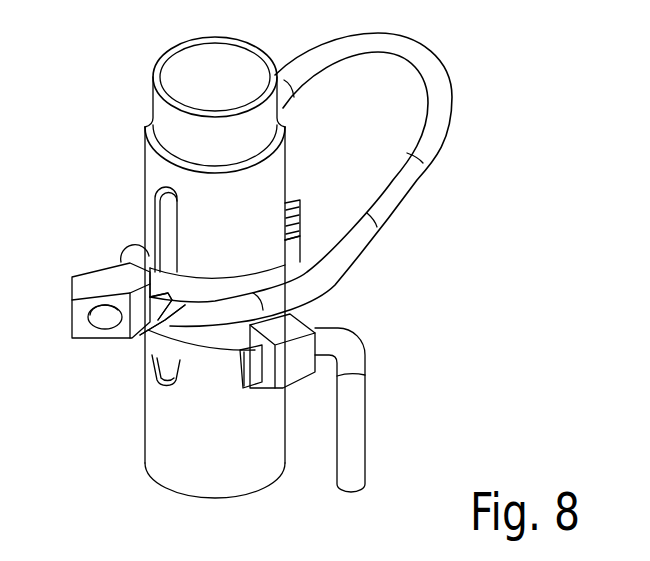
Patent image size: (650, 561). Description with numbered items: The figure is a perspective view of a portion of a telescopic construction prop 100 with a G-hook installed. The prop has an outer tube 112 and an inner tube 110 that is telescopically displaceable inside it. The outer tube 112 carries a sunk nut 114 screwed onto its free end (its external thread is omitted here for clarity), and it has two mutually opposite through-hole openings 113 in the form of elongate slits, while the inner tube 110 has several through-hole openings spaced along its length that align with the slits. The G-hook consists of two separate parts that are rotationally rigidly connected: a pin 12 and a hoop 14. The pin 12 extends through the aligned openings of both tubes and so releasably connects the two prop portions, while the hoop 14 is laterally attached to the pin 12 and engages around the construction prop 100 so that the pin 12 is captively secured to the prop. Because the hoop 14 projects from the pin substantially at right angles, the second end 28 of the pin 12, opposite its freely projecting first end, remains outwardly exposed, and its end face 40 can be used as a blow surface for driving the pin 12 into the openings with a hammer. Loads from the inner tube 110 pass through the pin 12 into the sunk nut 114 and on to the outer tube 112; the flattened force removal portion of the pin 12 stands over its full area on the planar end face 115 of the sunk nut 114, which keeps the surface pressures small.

The telescopic construction prop 100 is at (477, 233).
The inner tube 110 is at (160, 58).
The outer tube 112 is at (148, 122).
The through-hole openings 113 is at (167, 218).
The sunk nut 114 is at (130, 253).
The pin 12 is at (125, 288).
The second end 28 is at (150, 326).
The end face 40 is at (121, 339).
The planar end face 115 is at (150, 338).
The hoop 14 is at (347, 245).